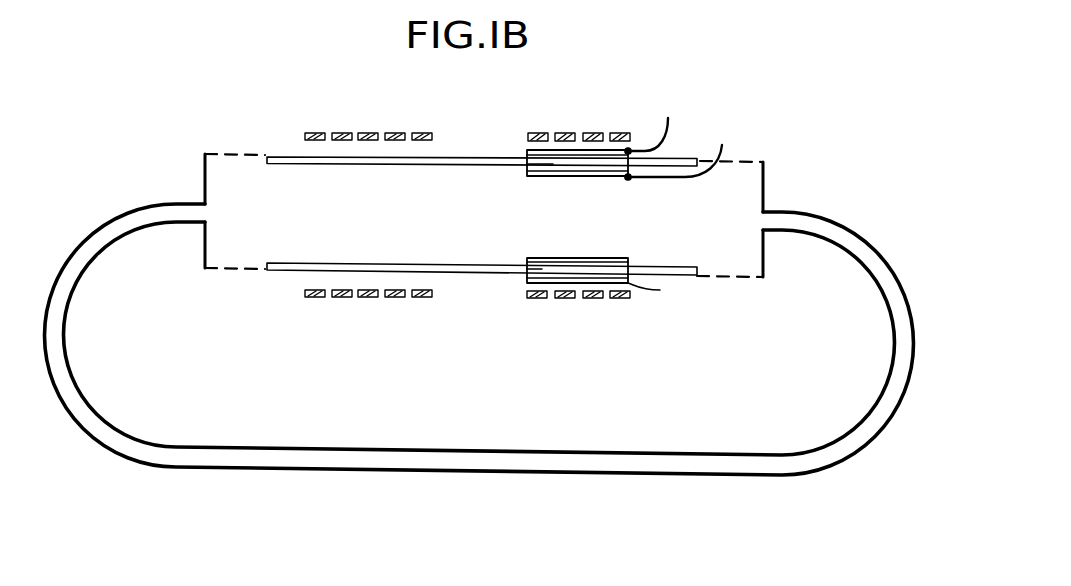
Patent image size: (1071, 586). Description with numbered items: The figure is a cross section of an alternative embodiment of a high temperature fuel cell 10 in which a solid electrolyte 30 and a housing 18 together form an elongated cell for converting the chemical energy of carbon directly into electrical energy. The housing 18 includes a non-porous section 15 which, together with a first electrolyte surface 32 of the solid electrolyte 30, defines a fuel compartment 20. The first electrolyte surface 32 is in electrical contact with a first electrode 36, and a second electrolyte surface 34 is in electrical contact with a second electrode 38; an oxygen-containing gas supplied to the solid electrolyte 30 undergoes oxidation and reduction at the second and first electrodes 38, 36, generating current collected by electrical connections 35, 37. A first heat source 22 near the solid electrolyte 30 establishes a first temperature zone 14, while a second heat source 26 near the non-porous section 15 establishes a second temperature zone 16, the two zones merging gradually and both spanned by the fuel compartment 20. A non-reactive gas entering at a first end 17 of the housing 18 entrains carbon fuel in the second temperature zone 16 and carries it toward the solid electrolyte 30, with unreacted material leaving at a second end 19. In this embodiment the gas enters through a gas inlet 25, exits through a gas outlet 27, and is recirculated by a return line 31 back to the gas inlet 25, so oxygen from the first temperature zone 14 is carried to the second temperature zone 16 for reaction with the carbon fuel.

The high temperature fuel cell 10 is at (638, 74).
The first temperature zone 14 is at (660, 290).
The non-porous section 15 is at (300, 156).
The second temperature zone 16 is at (322, 237).
The first end 17 is at (258, 272).
The housing 18 is at (203, 152).
The second end 19 is at (697, 278).
The fuel compartment 20 is at (284, 187).
The first heat source 22 is at (596, 133).
The gas inlet 25 is at (205, 203).
The second heat source 26 is at (395, 131).
The gas outlet 27 is at (765, 210).
The solid electrolyte 30 is at (542, 270).
The return line 31 is at (483, 472).
The first electrolyte surface 32 is at (575, 263).
The second electrolyte surface 34 is at (565, 133).
The electrical connection 35 is at (722, 145).
The first electrode 36 is at (628, 267).
The electrical connection 37 is at (668, 118).
The second electrode 38 is at (527, 150).